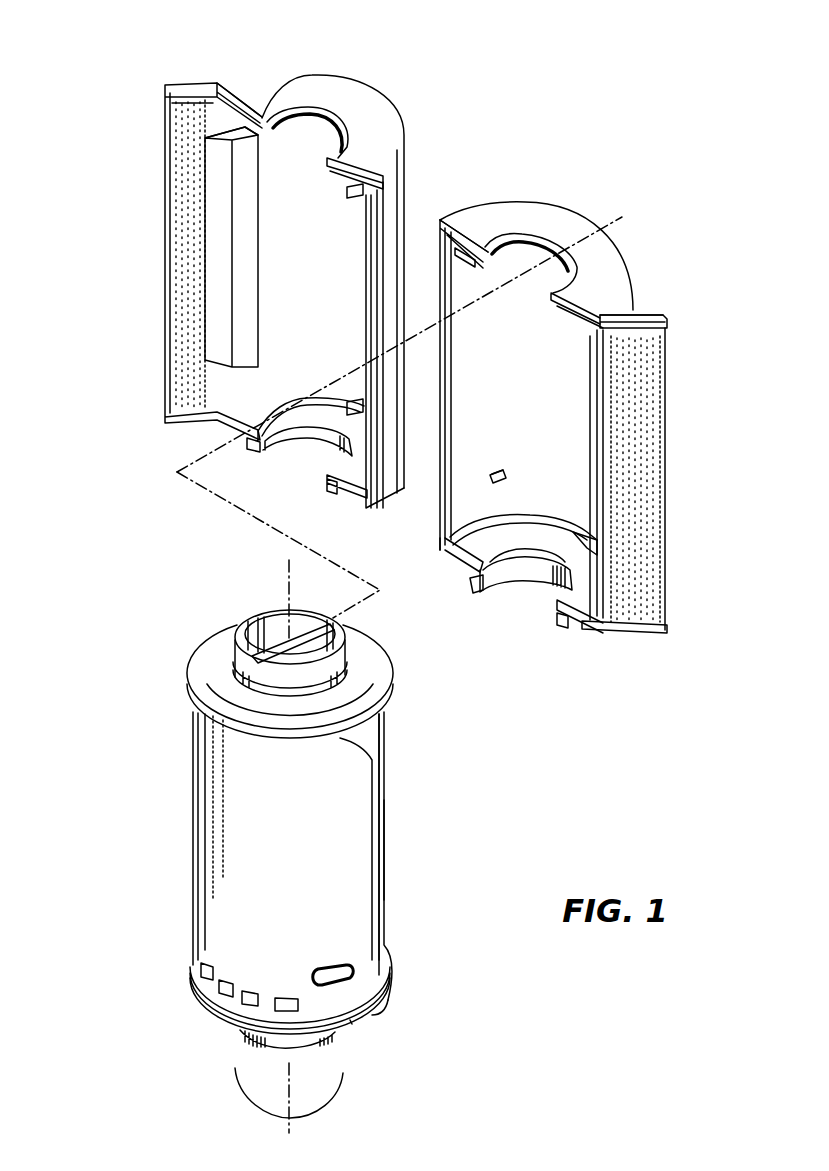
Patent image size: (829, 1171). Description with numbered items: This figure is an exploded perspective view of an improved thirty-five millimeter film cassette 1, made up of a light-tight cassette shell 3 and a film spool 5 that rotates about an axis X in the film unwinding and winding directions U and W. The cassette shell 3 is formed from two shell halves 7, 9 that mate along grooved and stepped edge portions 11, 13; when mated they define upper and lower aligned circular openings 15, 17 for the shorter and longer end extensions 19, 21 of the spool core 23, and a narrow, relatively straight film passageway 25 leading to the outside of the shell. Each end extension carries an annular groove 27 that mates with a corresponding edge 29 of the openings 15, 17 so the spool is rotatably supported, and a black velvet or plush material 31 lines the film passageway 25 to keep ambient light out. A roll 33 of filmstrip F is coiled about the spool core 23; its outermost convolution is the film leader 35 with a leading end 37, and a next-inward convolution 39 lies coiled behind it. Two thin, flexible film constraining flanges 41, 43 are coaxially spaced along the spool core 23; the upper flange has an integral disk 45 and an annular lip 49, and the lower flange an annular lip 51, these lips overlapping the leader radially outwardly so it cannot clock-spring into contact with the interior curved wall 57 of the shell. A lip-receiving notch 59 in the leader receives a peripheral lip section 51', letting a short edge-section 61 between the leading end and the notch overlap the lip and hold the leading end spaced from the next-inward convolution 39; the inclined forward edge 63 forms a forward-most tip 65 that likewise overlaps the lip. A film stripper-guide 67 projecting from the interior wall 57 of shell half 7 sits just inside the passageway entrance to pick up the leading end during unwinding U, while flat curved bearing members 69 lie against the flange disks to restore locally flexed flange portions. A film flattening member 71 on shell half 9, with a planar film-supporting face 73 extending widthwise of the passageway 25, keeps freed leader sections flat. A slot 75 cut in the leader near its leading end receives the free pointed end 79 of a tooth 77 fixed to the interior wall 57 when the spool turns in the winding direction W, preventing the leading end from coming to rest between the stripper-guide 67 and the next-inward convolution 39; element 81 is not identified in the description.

The film cassette 1 is at (204, 65).
The cassette shell 3 is at (407, 166).
The film spool 5 is at (190, 862).
The shell half 7 is at (567, 210).
The shell half 9 is at (350, 85).
The grooved and stepped edge portion 11 is at (443, 538).
The grooved and stepped edge portion 13 is at (362, 500).
The upper circular opening 15 is at (291, 122).
The lower circular opening 17 is at (290, 440).
The shorter end extension 19 is at (380, 637).
The longer end extension 21 is at (360, 1027).
The spool core 23 is at (231, 633).
The film passageway 25 is at (168, 289).
The annular groove 27 is at (323, 678).
The edge of opening 29 is at (327, 120).
The black velvet or plush material 31 is at (167, 142).
The film roll 33 is at (188, 790).
The film leader 35 is at (200, 755).
The leading end 37 is at (357, 797).
The next-inward convolution 39 is at (373, 755).
The upper film constraining flange 41 is at (190, 666).
The lower film constraining flange 43 is at (216, 1020).
The disk 45 is at (208, 652).
The annular lip 49 is at (213, 705).
The annular lip 51 is at (235, 1003).
The peripheral lip section 51' is at (381, 1054).
The interior curved wall 57 is at (293, 312).
The lip-receiving notch 59 is at (312, 1018).
The edge-section 61 is at (377, 1027).
The forward edge 63 is at (375, 857).
The forward-most tip 65 is at (376, 1013).
The film stripper-guide 67 is at (590, 605).
The bearing members 69 is at (350, 192).
The film flattening member 71 is at (227, 136).
The film-supporting face 73 is at (220, 199).
The slot 75 is at (328, 968).
The tooth 77 is at (520, 471).
The free pointed end 79 is at (497, 478).
The inner wall 81 is at (588, 395).
The filmstrip F is at (222, 884).
The winding direction W is at (244, 1071).
The unwinding direction U is at (330, 1063).
The axis X is at (292, 570).